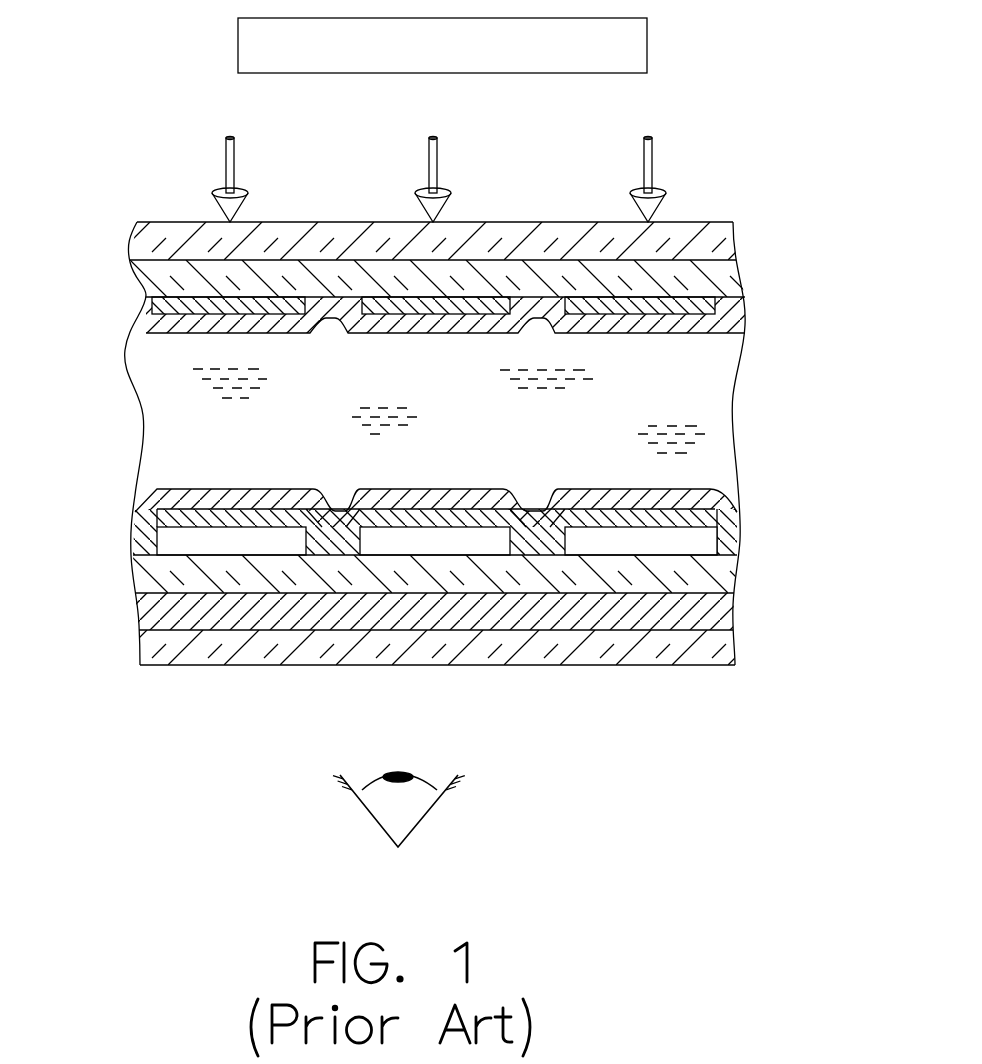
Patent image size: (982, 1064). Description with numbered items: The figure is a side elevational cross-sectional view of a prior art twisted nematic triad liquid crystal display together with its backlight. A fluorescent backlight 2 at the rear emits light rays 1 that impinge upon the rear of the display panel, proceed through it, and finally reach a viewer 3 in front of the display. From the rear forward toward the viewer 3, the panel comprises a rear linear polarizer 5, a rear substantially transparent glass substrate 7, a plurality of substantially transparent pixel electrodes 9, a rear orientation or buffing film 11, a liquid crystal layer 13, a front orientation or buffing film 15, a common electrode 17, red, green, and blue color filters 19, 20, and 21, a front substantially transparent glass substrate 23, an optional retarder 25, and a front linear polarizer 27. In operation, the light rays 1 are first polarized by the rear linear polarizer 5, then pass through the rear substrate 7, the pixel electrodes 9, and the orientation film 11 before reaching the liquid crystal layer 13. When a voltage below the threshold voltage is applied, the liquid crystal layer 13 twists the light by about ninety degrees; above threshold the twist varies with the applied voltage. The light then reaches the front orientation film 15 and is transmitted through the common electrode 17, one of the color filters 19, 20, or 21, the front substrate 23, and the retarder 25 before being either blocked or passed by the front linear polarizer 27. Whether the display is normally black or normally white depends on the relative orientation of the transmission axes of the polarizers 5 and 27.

The light rays 1 is at (234, 158).
The fluorescent backlight 2 is at (618, 64).
The viewer 3 is at (352, 823).
The rear linear polarizer 5 is at (160, 245).
The rear substantially transparent glass substrate 7 is at (163, 274).
The pixel electrodes 9 is at (150, 320).
The rear orientation or buffing film 11 is at (290, 322).
The liquid crystal layer 13 is at (172, 418).
The front orientation or buffing film 15 is at (715, 500).
The common electrode 17 is at (350, 497).
The red color filter 19 is at (700, 538).
The green color filter 20 is at (455, 530).
The blue color filter 21 is at (152, 522).
The front substantially transparent glass substrate 23 is at (180, 573).
The optional retarder 25 is at (700, 615).
The front linear polarizer 27 is at (180, 645).